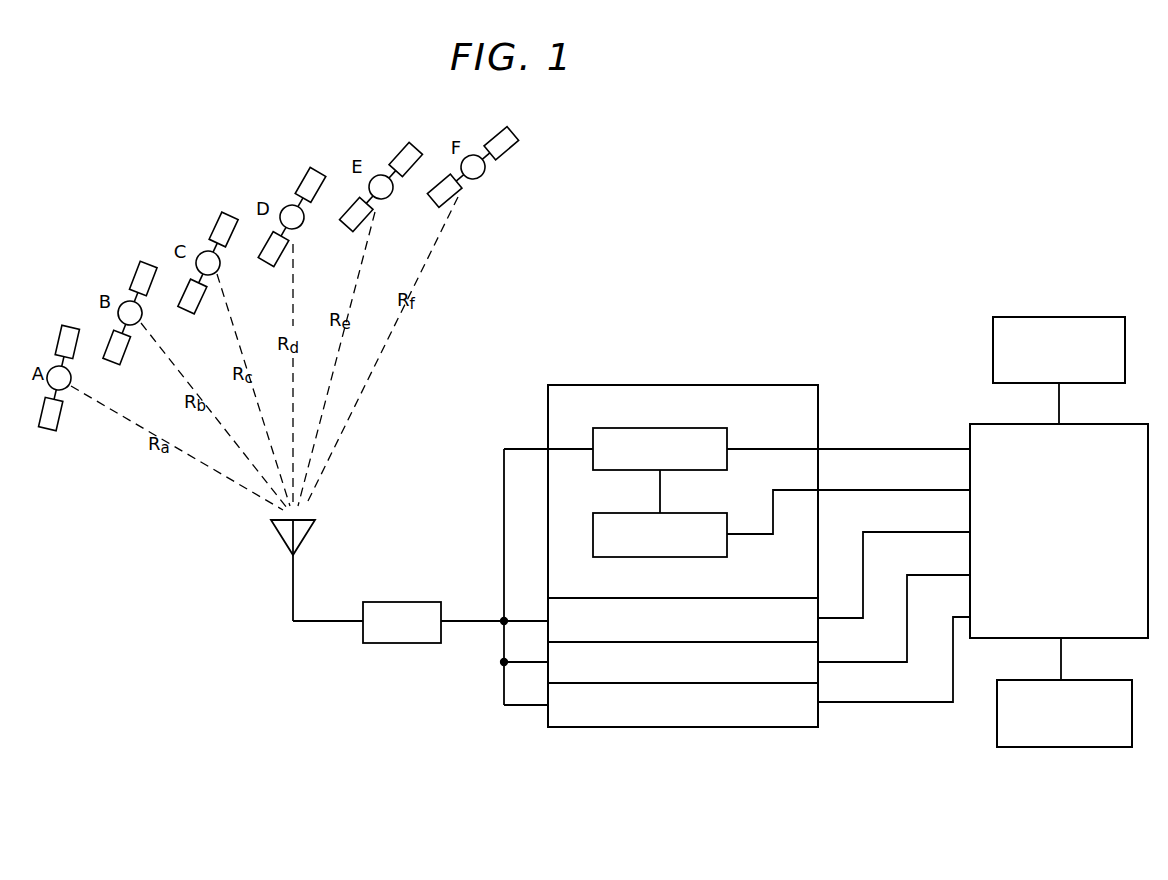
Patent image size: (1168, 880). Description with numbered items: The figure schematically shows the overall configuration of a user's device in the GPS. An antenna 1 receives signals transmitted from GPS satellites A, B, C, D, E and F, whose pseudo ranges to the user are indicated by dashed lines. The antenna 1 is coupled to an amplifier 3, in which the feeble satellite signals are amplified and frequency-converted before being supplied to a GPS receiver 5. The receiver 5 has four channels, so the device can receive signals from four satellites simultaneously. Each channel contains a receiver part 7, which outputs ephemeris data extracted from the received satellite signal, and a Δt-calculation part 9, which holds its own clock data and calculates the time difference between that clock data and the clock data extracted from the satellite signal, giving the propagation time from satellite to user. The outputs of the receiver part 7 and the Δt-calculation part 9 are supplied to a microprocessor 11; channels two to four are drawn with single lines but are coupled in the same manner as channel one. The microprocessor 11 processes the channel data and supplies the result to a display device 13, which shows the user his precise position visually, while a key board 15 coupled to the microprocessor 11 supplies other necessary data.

The antenna 1 is at (283, 541).
The amplifier 3 is at (420, 602).
The GPS receiver 5 is at (547, 398).
The receiver part 7 is at (730, 437).
The Δt-calculation part 9 is at (718, 557).
The microprocessor 11 is at (1130, 424).
The display device 13 is at (1110, 317).
The key board 15 is at (1132, 693).